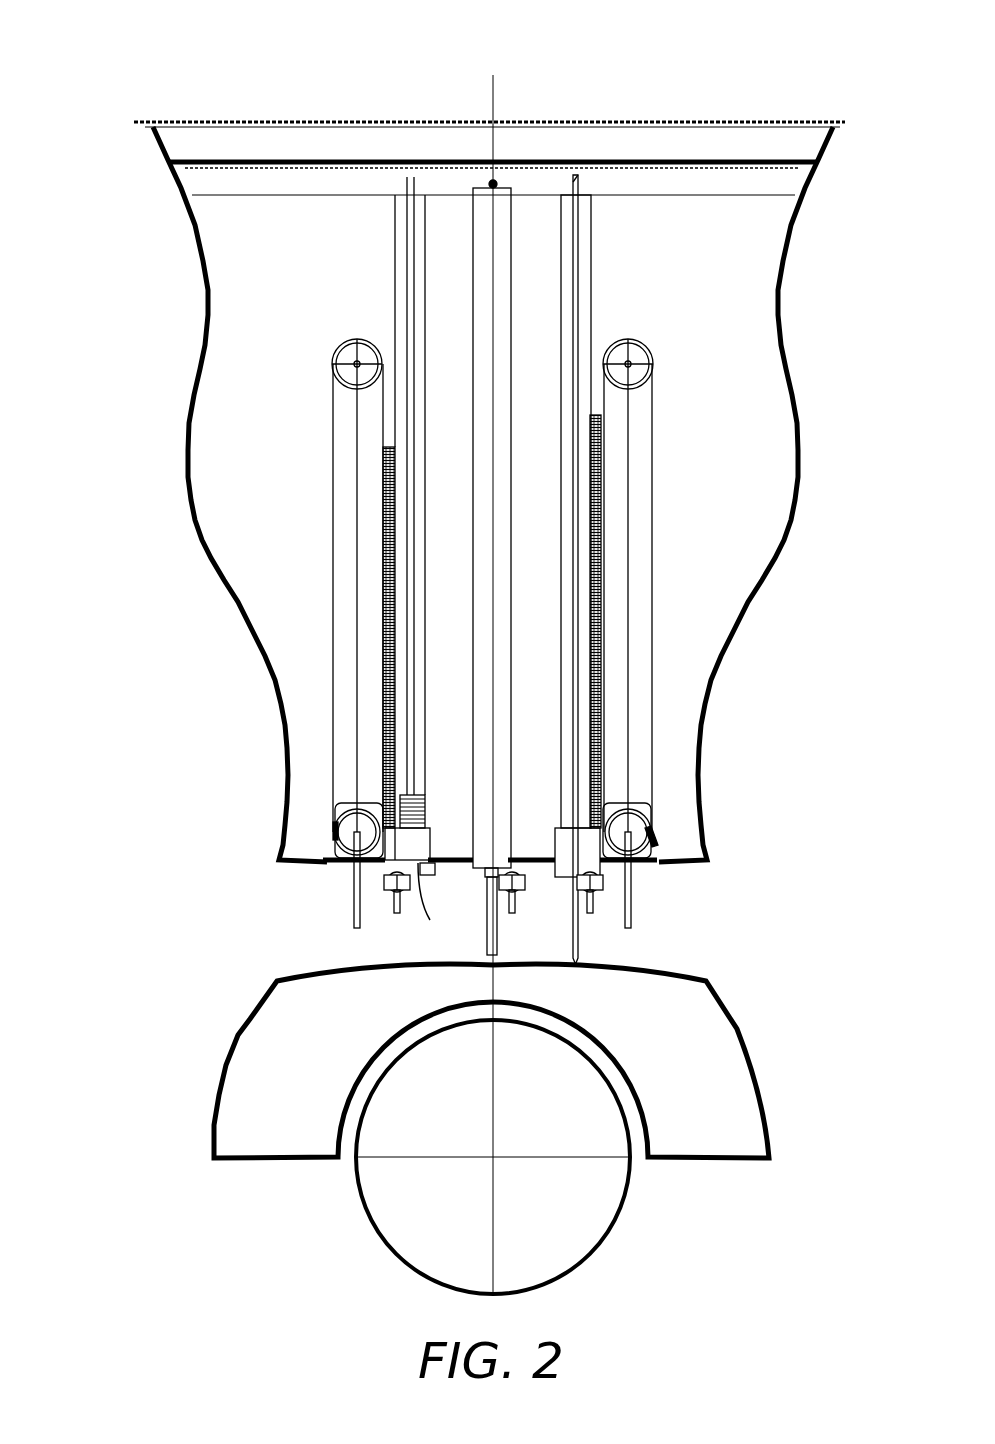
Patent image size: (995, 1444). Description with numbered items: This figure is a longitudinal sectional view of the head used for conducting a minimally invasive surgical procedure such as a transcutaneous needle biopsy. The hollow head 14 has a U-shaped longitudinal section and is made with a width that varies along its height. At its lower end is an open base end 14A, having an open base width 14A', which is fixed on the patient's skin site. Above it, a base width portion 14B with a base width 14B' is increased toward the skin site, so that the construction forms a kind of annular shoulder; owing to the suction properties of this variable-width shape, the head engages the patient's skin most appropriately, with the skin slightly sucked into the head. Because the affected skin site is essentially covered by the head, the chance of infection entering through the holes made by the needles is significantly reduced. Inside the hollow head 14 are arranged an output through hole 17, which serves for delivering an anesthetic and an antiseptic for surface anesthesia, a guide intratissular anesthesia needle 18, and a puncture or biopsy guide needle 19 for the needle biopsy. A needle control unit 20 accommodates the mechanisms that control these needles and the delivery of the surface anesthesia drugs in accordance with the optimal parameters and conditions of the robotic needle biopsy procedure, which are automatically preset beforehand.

The hollow head 14 is at (246, 550).
The open base end 14A is at (489, 63).
The open base width 14A' is at (486, 95).
The base width portion 14B is at (446, 219).
The base width 14B' is at (420, 188).
The through hole 17 is at (497, 283).
The guide intratissular anesthesia needle 18 is at (580, 943).
The biopsy guide needle 19 is at (413, 745).
The needle control unit 20 is at (498, 880).